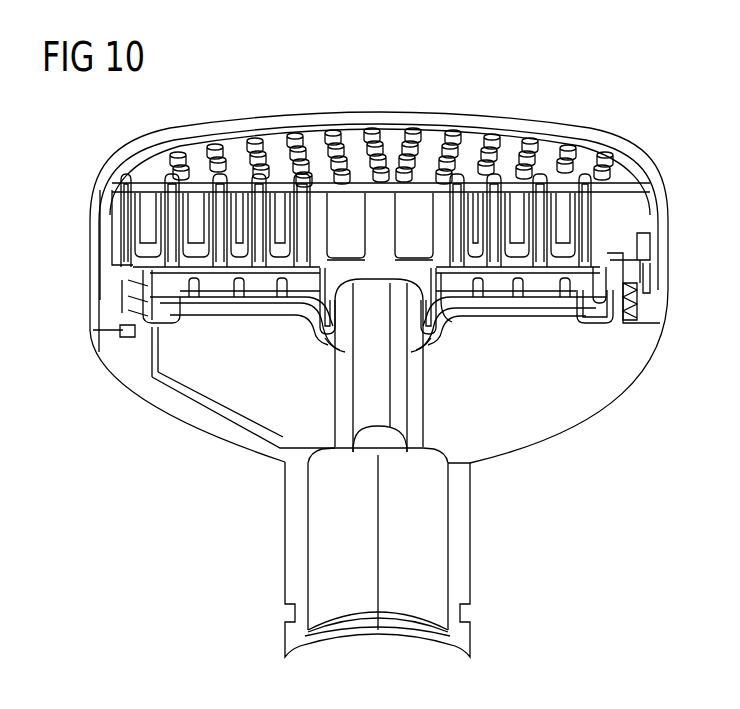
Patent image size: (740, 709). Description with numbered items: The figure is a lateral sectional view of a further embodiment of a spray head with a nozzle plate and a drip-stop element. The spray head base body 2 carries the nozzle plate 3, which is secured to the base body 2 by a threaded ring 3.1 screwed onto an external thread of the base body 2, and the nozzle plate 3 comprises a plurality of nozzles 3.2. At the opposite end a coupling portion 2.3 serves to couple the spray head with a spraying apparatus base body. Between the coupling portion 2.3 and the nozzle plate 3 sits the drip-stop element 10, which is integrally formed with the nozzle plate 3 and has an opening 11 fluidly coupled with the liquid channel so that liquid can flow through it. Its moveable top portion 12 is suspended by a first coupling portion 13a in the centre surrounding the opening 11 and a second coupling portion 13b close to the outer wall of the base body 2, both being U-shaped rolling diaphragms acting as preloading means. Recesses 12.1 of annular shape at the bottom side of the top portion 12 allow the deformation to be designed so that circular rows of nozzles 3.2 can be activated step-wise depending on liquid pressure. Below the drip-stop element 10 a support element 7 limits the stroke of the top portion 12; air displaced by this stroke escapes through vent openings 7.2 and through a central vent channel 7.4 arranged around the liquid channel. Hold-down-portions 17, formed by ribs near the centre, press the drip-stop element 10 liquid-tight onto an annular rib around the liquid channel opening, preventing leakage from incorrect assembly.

The spray head base body 2 is at (540, 462).
The coupling portion 2.3 is at (490, 594).
The nozzle plate 3 is at (612, 262).
The threaded ring 3.1 is at (652, 311).
The nozzles 3.2 is at (460, 128).
The support element 7 is at (514, 305).
The vent openings 7.2 is at (222, 300).
The vent channel 7.4 is at (428, 354).
The drip-stop element 10 is at (258, 314).
The opening 11 is at (380, 276).
The top portion 12 is at (205, 270).
The recesses 12.1 is at (568, 284).
The first coupling portion 13a is at (317, 334).
The second coupling portion 13b is at (144, 301).
The hold-down-portions 17 is at (447, 292).